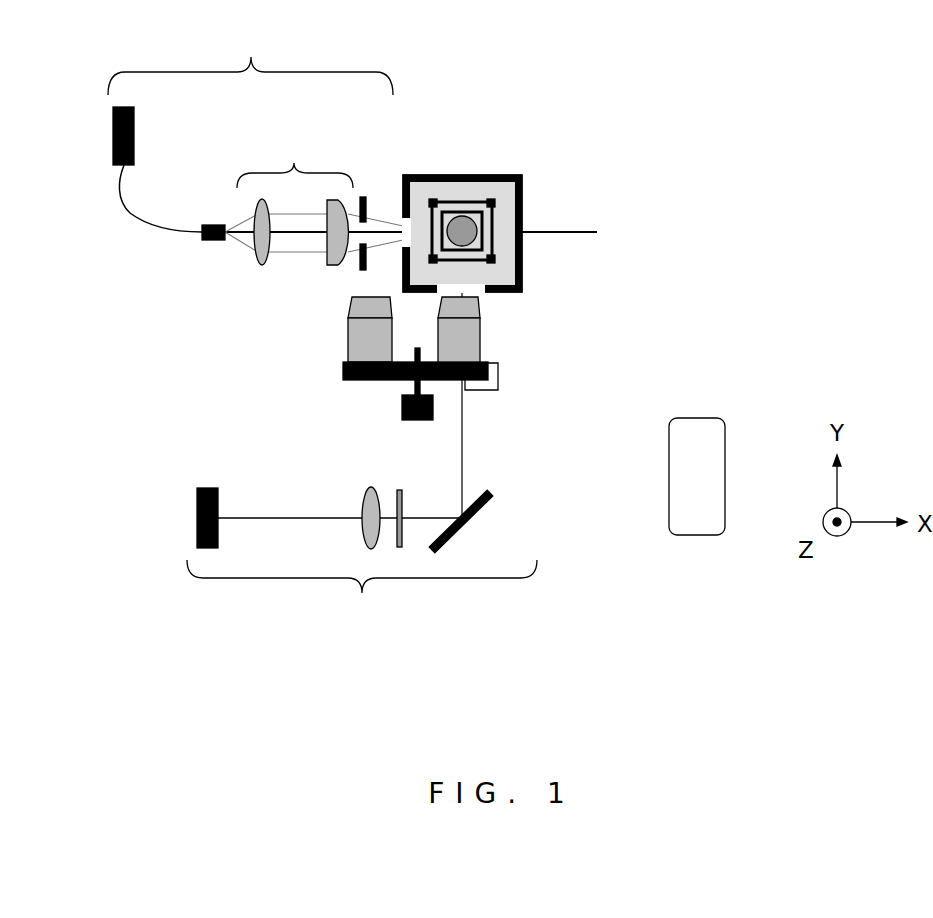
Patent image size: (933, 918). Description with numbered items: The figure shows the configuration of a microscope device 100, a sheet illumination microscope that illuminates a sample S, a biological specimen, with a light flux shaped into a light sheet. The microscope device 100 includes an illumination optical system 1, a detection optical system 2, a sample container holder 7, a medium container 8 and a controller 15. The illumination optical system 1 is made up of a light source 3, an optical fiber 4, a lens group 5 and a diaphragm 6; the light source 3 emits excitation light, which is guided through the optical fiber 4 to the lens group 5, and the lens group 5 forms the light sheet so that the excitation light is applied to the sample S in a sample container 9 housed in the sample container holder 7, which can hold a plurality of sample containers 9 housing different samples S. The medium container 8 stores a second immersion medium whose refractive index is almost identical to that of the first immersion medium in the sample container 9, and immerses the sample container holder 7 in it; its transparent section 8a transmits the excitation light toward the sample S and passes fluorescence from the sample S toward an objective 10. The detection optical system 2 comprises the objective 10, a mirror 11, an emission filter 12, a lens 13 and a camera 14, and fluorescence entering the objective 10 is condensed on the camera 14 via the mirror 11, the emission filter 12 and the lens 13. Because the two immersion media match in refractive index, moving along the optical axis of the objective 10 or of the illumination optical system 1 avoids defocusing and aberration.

The illumination optical system 1 is at (251, 57).
The detection optical system 2 is at (362, 593).
The light source 3 is at (113, 122).
The optical fiber 4 is at (136, 215).
The lens group 5 is at (294, 163).
The diaphragm 6 is at (363, 196).
The sample container holder 7 is at (500, 175).
The medium container 8 is at (422, 175).
The transparent section 8a is at (403, 246).
The sample container 9 is at (452, 202).
The sample S is at (478, 204).
The objective 10 is at (485, 347).
The mirror 11 is at (452, 539).
The emission filter 12 is at (405, 500).
The lens 13 is at (362, 498).
The camera 14 is at (219, 497).
The controller 15 is at (725, 448).
The microscope device 100 is at (100, 543).